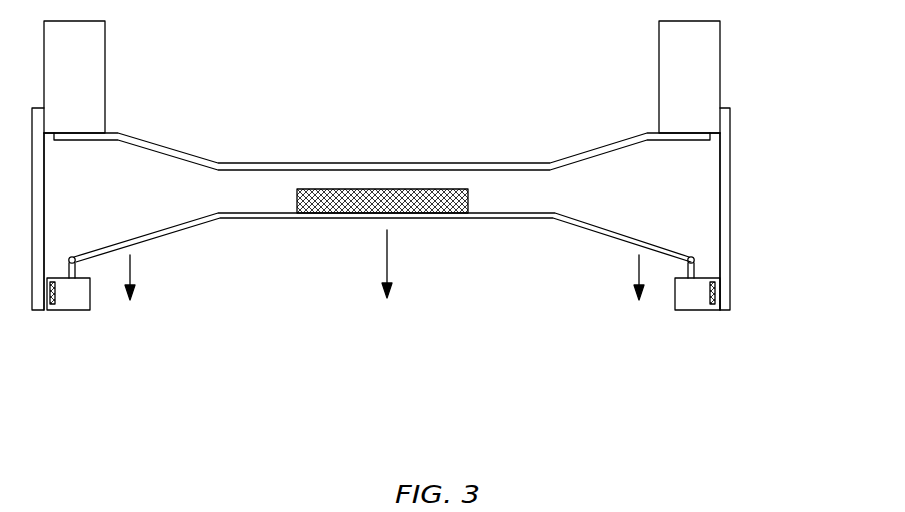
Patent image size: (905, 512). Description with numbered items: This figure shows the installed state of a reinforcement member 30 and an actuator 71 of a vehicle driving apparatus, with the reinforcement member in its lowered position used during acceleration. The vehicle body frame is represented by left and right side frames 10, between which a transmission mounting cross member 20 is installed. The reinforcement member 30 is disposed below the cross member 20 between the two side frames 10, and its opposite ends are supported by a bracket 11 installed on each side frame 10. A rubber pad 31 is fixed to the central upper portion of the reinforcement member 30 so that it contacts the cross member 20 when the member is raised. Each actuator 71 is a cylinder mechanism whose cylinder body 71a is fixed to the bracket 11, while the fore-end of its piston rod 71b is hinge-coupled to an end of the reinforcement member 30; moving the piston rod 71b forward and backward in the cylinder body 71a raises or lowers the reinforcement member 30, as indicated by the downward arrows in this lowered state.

The side frame 10 is at (720, 65).
The bracket 11 is at (726, 222).
The transmission mounting cross member 20 is at (563, 160).
The reinforcement member 30 is at (208, 222).
The pad 31 is at (433, 200).
The actuator 71 is at (700, 312).
The cylinder body 71a is at (680, 300).
The piston rod 71b is at (689, 264).